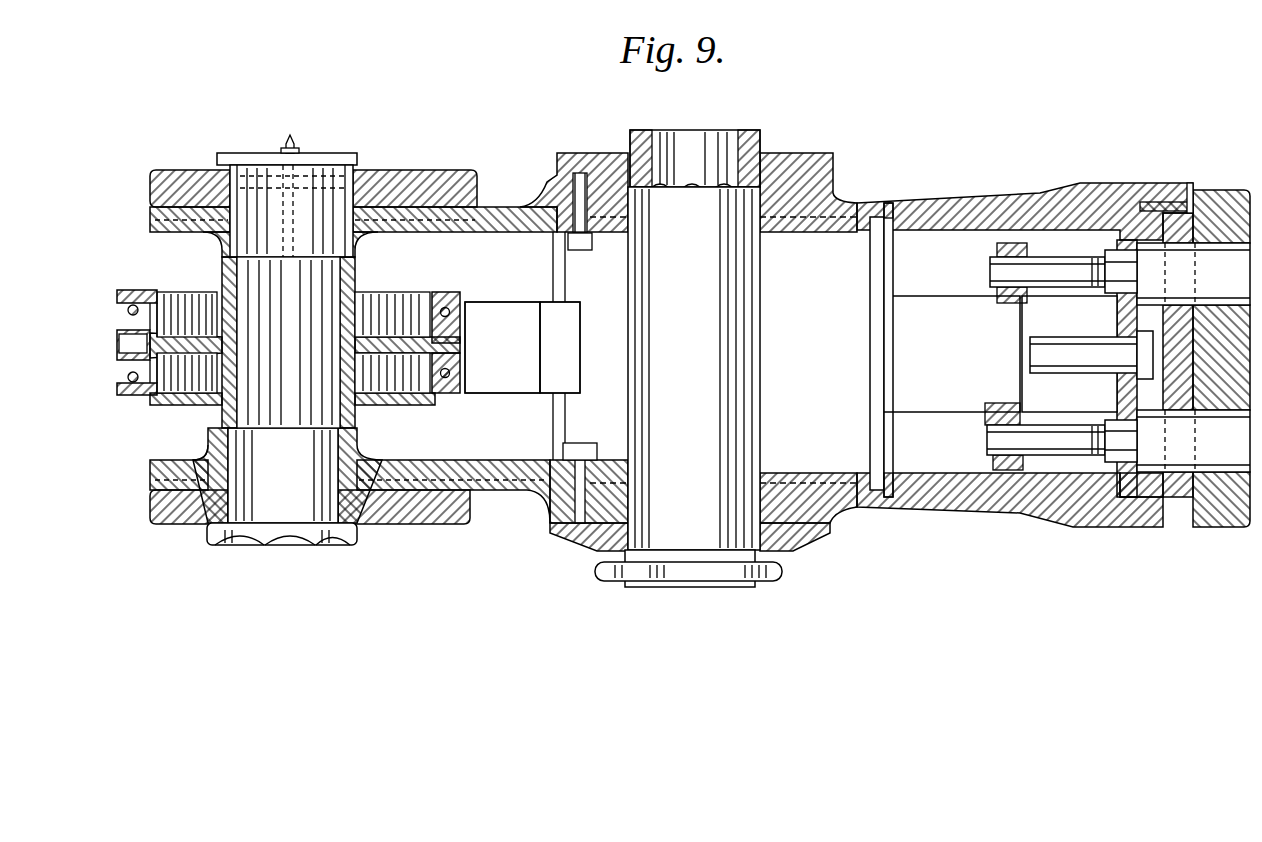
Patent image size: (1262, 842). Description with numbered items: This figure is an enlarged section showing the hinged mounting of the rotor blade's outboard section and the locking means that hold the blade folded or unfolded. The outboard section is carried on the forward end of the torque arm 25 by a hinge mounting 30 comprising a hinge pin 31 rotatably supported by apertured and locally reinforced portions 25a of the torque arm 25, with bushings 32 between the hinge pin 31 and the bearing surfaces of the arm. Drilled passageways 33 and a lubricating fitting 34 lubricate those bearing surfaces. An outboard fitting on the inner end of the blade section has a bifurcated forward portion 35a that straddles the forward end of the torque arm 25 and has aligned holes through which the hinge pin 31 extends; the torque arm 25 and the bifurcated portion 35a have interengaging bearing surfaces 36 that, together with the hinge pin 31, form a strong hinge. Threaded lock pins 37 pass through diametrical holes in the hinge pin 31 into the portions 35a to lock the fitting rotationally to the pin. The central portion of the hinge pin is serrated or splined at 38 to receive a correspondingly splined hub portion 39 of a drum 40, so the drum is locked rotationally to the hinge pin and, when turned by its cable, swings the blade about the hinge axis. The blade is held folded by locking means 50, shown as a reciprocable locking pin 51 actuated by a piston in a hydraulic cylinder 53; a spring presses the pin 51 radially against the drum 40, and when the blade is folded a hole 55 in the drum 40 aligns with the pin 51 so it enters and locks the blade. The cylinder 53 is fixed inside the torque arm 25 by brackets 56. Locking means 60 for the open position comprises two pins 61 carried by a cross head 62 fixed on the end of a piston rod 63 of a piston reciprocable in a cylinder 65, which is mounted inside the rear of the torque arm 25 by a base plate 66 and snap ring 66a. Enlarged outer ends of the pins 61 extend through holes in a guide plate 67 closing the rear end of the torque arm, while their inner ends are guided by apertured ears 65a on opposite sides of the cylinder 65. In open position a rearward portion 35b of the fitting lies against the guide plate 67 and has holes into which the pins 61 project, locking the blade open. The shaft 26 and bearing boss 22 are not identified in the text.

The bearing boss 22 is at (787, 154).
The torque arm 25 is at (908, 509).
The apertured and locally reinforced portions 25a is at (360, 239).
The shaft 26 is at (760, 288).
The hinge mounting 30 is at (201, 439).
The hinge pin 31 is at (229, 239).
The bushings 32 is at (347, 530).
The drilled passageways 33 is at (292, 250).
The lubricating fitting 34 is at (297, 144).
The bifurcated forward portion 35a is at (458, 182).
The rearward portion 35b is at (1227, 190).
The interengaging bearing surfaces 36 is at (427, 486).
The threaded lock pins 37 is at (152, 191).
The serrated or splined central portion 38 is at (320, 312).
The hub portion 39 is at (354, 382).
The drum 40 is at (418, 382).
The locking means 50 is at (501, 301).
The locking pin 51 is at (467, 360).
The hydraulic cylinder 53 is at (505, 394).
The hole 55 is at (118, 356).
The brackets 56 is at (567, 273).
The locking means 60 is at (947, 293).
The pins 61 is at (1232, 288).
The cross head 62 is at (1120, 322).
The piston rod 63 is at (1097, 371).
The cylinder 65 is at (940, 413).
The apertured ears 65a is at (1027, 252).
The base plate 66 is at (880, 441).
The snap ring 66a is at (891, 474).
The guide plate 67 is at (1182, 524).